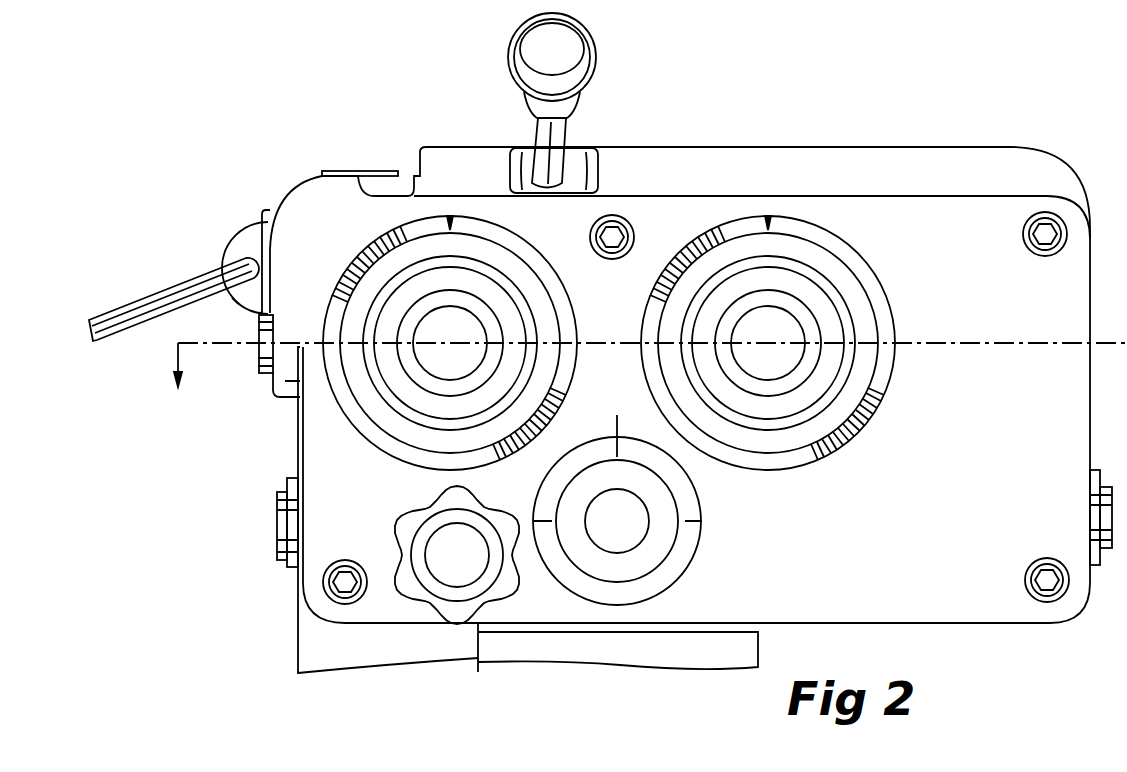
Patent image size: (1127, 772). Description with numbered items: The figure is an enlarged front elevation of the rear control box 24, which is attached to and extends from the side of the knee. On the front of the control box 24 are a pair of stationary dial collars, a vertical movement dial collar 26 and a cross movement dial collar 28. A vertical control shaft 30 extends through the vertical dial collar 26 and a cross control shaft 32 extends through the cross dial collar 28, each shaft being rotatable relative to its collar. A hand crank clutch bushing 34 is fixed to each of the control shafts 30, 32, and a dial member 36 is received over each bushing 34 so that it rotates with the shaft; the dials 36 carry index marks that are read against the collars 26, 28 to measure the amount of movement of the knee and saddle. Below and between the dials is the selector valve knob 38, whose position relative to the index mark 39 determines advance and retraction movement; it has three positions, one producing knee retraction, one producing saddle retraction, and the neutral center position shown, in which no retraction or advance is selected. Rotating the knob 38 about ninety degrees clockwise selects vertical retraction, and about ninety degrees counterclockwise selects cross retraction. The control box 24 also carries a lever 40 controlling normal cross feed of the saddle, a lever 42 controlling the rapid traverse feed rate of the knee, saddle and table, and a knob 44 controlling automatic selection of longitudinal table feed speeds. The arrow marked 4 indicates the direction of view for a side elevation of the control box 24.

The control box 24 is at (966, 494).
The vertical movement dial collar 26 is at (846, 238).
The cross movement dial collar 28 is at (506, 235).
The vertical control shaft 30 is at (787, 337).
The cross control shaft 32 is at (464, 337).
The hand crank clutch bushing 34 is at (523, 323).
The dial member 36 is at (551, 292).
The selector valve knob 38 is at (676, 497).
The index mark 39 is at (617, 423).
The lever 40 is at (582, 126).
The lever 42 is at (171, 285).
The knob 44 is at (411, 508).
The section line indicator 4 is at (639, 369).